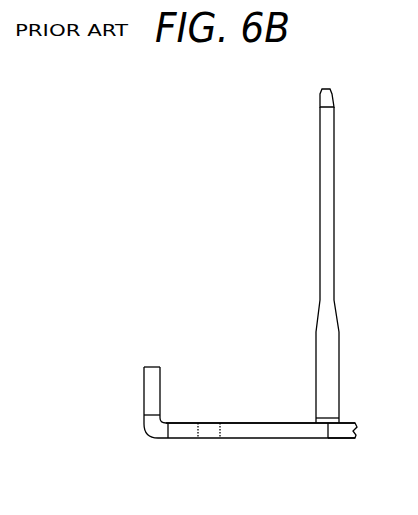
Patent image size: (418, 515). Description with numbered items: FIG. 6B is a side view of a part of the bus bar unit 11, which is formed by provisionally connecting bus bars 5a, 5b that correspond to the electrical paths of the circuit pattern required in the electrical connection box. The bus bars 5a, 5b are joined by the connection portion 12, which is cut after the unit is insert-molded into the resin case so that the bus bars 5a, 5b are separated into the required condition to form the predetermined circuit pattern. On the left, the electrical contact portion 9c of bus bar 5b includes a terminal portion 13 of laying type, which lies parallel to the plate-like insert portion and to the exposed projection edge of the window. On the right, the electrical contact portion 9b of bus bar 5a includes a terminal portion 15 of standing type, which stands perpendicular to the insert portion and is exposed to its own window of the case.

The bus bar unit 11 is at (200, 156).
The terminal portion 15 is at (335, 158).
The electrical contact portion 9b is at (302, 95).
The terminal portion 13 is at (152, 367).
The electrical contact portion 9c is at (140, 350).
The connection portion 12 is at (198, 431).
The bus bar 5b is at (224, 411).
The bus bar 5a is at (417, 408).